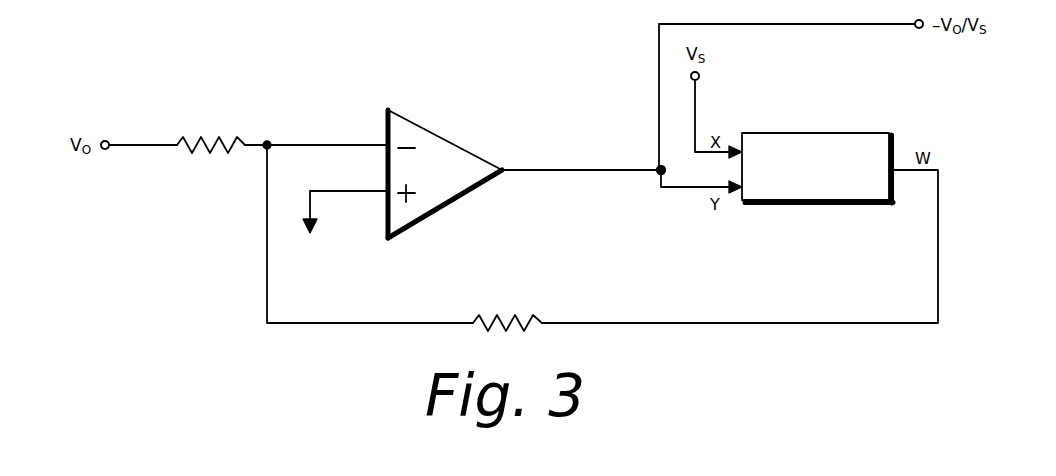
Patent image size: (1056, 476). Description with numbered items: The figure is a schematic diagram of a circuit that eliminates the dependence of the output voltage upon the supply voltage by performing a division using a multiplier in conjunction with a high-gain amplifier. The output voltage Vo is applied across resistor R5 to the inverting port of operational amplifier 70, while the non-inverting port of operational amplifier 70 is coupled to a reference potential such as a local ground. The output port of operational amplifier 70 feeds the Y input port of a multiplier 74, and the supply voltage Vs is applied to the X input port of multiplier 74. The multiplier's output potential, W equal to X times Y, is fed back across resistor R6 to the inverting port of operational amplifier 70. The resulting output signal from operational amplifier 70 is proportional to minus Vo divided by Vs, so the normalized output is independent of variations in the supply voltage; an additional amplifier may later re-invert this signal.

The operational amplifier 70 is at (446, 134).
The multiplier 74 is at (848, 133).
The resistor R5 is at (211, 134).
The resistor R6 is at (507, 308).